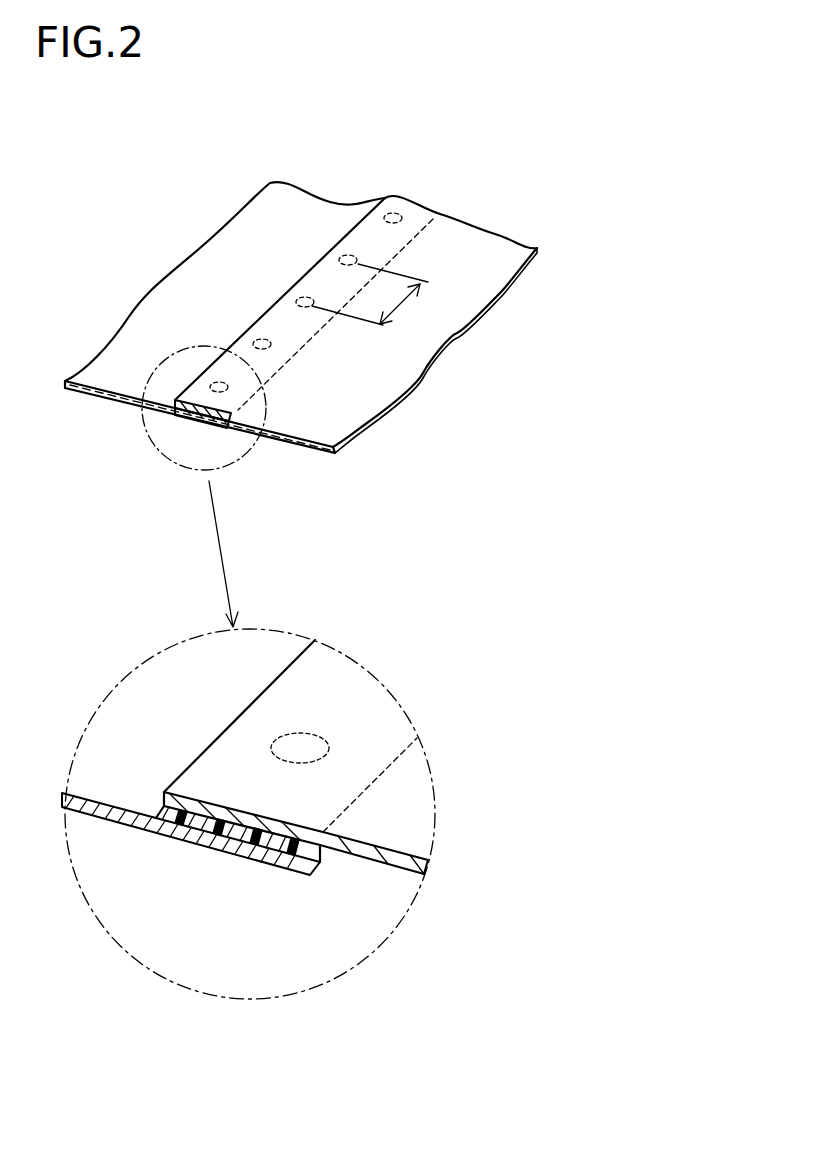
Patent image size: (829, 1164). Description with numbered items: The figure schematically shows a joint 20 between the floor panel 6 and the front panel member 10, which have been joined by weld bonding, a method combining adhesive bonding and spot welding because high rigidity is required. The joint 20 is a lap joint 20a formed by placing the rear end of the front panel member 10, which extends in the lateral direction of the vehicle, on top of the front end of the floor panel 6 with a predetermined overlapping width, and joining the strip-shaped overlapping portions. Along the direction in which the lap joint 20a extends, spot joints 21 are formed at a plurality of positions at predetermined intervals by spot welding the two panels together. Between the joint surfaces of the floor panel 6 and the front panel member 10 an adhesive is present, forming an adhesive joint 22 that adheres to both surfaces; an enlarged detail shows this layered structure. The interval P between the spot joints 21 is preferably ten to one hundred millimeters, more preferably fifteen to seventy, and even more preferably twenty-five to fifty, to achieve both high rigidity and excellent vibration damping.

The floor panel 6 is at (257, 220).
The front panel member 10 is at (483, 250).
The joint 20 is at (305, 492).
The lap joint 20a is at (381, 227).
The spot joints 21 is at (262, 340).
The adhesive joint 22 is at (244, 836).
The interval between the spot joints P is at (370, 299).